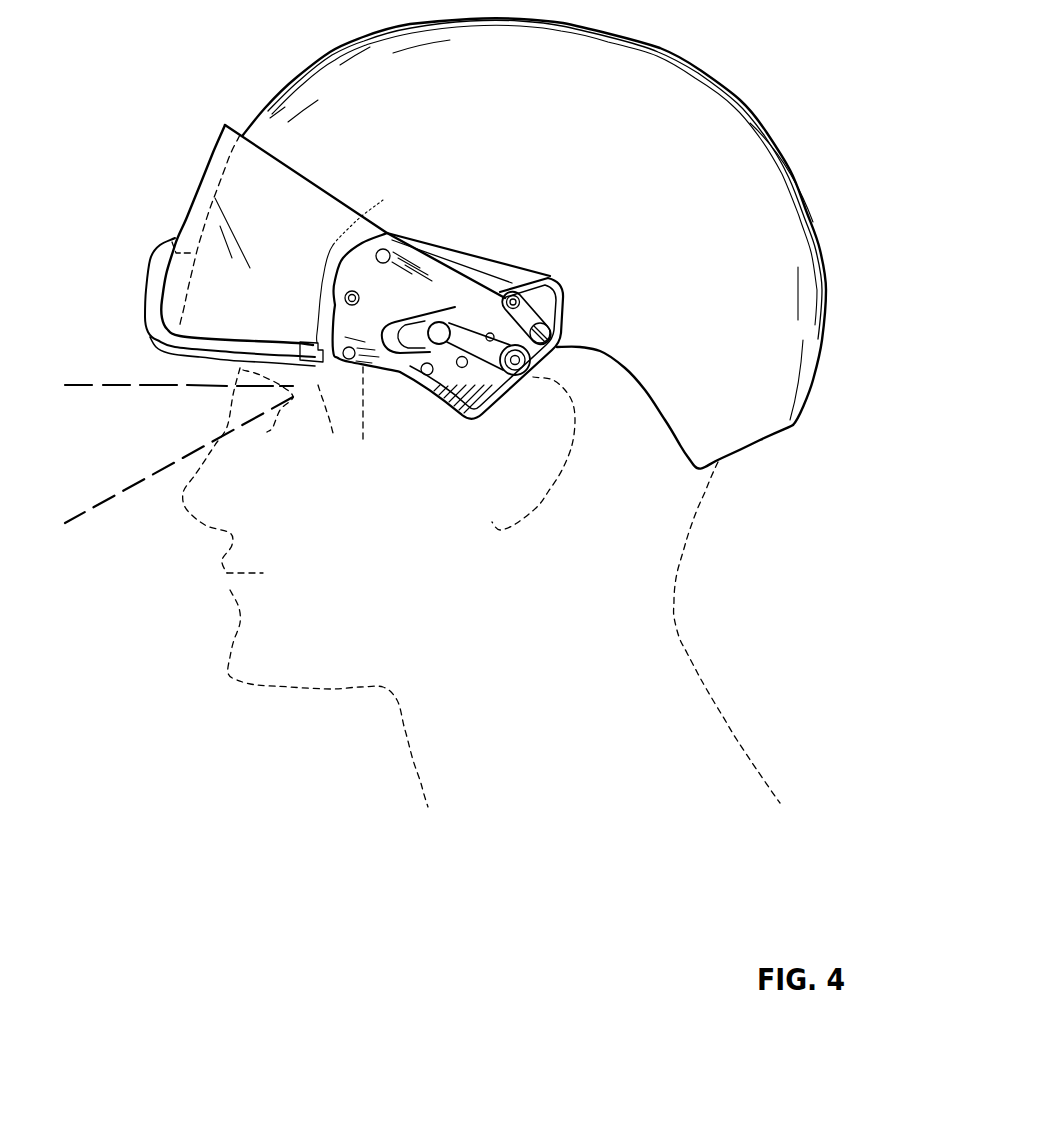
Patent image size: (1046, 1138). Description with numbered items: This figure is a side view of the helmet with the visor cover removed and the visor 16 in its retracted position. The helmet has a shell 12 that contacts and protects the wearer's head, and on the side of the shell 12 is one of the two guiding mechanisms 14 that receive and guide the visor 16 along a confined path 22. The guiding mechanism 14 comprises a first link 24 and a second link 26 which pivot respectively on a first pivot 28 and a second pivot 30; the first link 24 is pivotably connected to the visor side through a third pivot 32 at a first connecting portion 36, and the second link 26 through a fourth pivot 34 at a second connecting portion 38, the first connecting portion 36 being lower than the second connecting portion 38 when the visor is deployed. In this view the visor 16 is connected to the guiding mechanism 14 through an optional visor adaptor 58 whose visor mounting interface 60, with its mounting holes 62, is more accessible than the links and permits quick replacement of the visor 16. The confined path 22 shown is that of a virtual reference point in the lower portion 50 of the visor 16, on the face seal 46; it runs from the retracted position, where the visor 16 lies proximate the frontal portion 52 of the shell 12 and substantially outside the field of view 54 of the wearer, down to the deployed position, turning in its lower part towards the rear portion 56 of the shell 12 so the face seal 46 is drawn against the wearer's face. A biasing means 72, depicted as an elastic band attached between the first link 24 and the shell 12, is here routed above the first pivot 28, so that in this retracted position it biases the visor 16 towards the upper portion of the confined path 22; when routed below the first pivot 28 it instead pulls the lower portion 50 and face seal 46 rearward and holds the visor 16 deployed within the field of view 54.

The shell 12 is at (593, 87).
The guiding mechanism 14 is at (560, 274).
The visor 16 is at (213, 167).
The confined path 22 is at (360, 362).
The first link 24 is at (426, 378).
The second link 26 is at (562, 304).
The first pivot 28 is at (463, 370).
The second pivot 30 is at (560, 322).
The third pivot 32 is at (433, 355).
The fourth pivot 34 is at (528, 268).
The first connecting portion 36 is at (393, 357).
The second connecting portion 38 is at (460, 275).
The face seal 46 is at (153, 307).
The lower portion 50 is at (150, 337).
The frontal portion 52 is at (167, 238).
The field of view 54 is at (103, 503).
The rear portion 56 is at (807, 320).
The visor adaptor 58 is at (443, 288).
The visor mounting interface 60 is at (382, 249).
The mounting hole 62 is at (372, 400).
The biasing means 72 is at (507, 380).